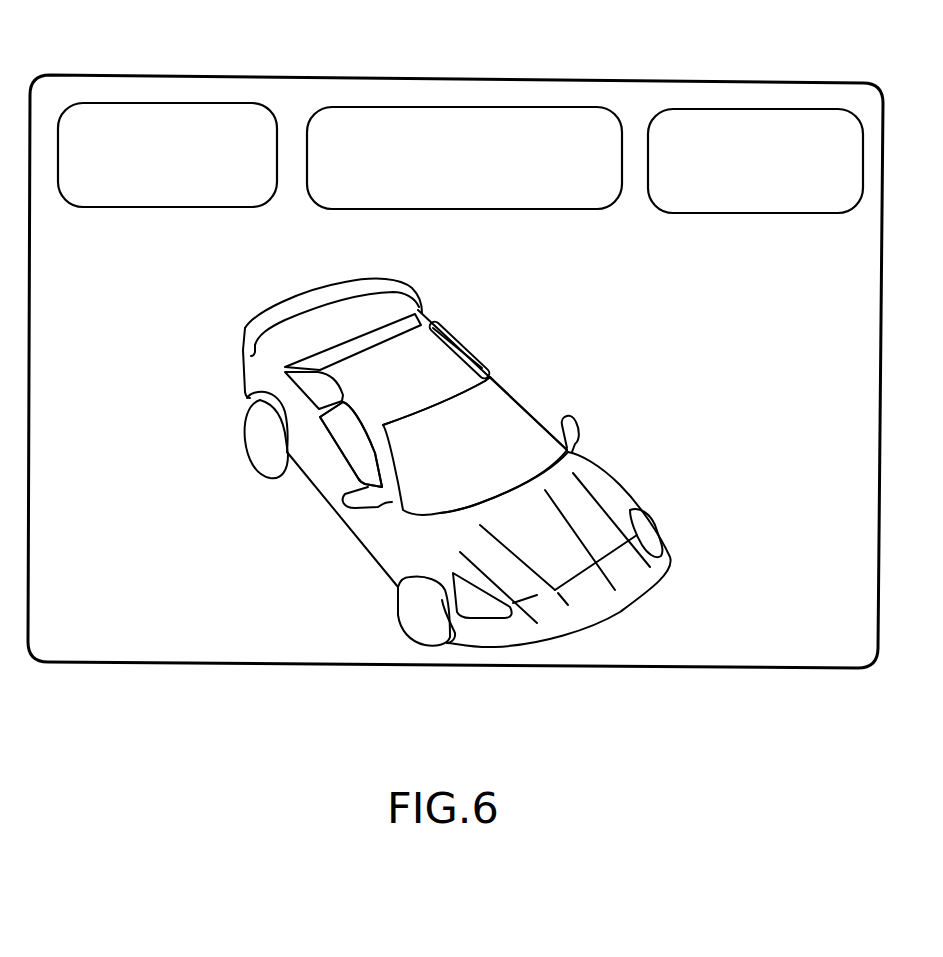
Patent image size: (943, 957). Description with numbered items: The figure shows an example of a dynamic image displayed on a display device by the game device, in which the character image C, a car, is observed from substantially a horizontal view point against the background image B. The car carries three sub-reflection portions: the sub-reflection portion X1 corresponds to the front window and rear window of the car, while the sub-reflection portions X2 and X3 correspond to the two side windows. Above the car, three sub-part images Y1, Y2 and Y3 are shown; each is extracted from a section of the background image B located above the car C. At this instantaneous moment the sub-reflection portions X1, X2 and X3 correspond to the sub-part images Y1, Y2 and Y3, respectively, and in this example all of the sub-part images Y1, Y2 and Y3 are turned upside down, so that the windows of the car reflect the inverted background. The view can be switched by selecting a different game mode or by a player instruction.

The background image B is at (265, 652).
The character image C is at (600, 612).
The sub-part image Y1 is at (543, 120).
The sub-part image Y2 is at (190, 118).
The sub-part image Y3 is at (778, 122).
The sub-reflection portion X1 is at (327, 352).
The sub-reflection portion X2 is at (307, 382).
The sub-reflection portion X3 is at (455, 333).